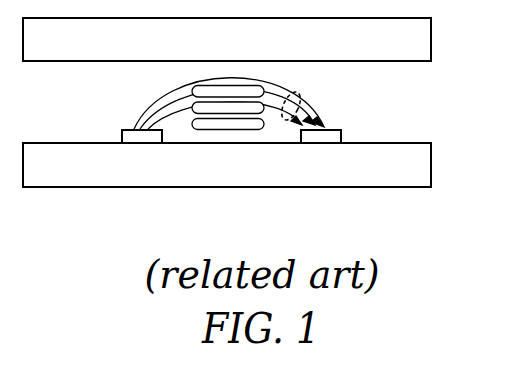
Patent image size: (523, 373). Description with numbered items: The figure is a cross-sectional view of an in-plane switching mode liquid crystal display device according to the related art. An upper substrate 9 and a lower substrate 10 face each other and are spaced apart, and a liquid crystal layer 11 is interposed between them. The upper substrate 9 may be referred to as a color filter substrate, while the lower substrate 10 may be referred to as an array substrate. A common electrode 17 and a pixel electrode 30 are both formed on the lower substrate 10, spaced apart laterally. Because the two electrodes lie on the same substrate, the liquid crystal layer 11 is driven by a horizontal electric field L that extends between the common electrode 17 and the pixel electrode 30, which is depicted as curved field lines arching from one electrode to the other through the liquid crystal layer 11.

The upper substrate 9 is at (448, 15).
The liquid crystal layer 11 is at (448, 61).
The lower substrate 10 is at (448, 142).
The pixel electrode 30 is at (138, 136).
The common electrode 17 is at (327, 136).
The horizontal electric field L is at (283, 121).